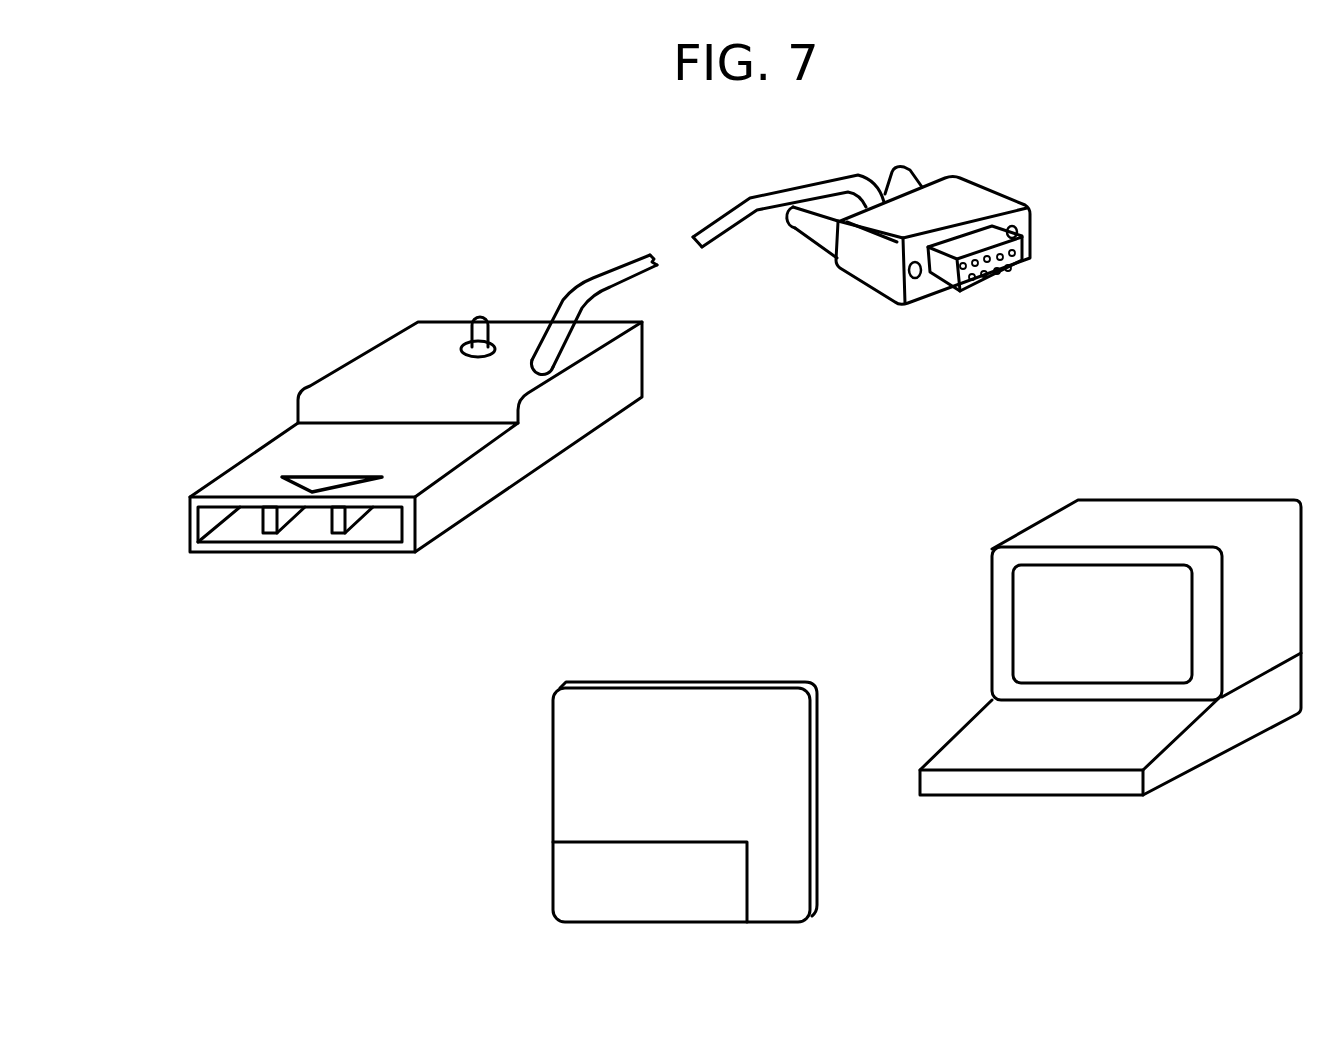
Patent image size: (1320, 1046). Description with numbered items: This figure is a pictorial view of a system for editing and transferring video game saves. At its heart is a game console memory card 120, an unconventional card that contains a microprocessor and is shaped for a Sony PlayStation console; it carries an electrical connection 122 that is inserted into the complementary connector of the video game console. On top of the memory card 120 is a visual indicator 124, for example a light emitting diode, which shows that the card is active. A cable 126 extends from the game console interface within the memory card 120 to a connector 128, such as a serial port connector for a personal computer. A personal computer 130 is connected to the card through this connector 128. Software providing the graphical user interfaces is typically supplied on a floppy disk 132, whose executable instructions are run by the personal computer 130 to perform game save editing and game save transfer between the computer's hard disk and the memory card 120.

The game console memory card 120 is at (523, 463).
The electrical connection 122 is at (302, 533).
The visual indicator 124 is at (477, 317).
The cable 126 is at (643, 275).
The connector 128 is at (988, 195).
The personal computer 130 is at (1058, 528).
The floppy disk 132 is at (817, 870).